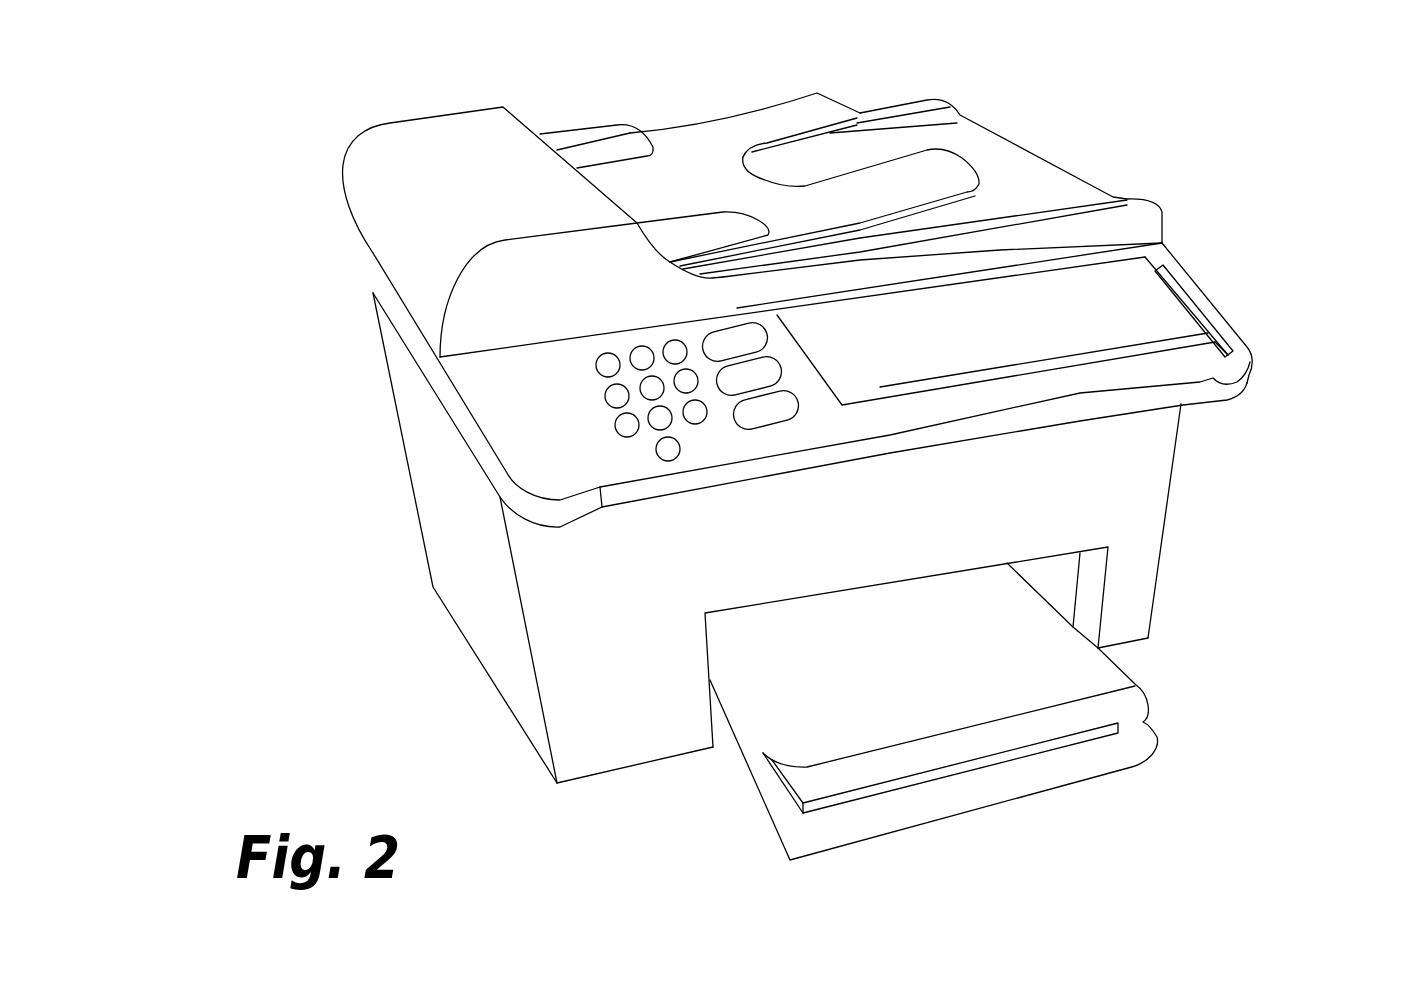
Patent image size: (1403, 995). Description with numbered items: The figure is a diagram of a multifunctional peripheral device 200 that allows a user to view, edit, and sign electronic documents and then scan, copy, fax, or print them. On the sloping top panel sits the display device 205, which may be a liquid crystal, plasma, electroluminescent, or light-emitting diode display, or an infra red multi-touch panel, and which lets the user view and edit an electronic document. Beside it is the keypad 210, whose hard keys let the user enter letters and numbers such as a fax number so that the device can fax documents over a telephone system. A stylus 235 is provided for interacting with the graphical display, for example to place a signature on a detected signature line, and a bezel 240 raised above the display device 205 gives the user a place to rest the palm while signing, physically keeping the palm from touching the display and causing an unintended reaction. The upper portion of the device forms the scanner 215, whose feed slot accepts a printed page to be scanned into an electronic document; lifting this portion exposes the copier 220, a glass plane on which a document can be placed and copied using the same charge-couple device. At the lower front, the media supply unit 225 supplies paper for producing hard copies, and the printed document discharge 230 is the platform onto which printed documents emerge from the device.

The multifunctional peripheral device 200 is at (252, 144).
The display device 205 is at (1133, 290).
The keypad 210 is at (577, 410).
The scanner 215 is at (579, 98).
The copier 220 is at (358, 299).
The media supply unit 225 is at (1142, 722).
The printed document discharge 230 is at (1028, 627).
The stylus 235 is at (1208, 327).
The bezel 240 is at (1190, 360).